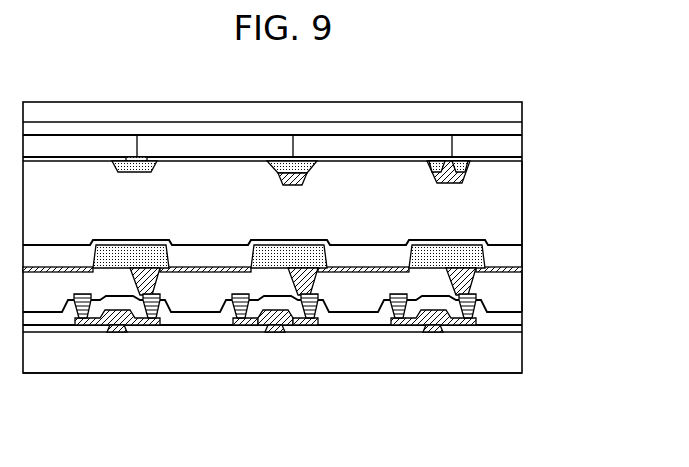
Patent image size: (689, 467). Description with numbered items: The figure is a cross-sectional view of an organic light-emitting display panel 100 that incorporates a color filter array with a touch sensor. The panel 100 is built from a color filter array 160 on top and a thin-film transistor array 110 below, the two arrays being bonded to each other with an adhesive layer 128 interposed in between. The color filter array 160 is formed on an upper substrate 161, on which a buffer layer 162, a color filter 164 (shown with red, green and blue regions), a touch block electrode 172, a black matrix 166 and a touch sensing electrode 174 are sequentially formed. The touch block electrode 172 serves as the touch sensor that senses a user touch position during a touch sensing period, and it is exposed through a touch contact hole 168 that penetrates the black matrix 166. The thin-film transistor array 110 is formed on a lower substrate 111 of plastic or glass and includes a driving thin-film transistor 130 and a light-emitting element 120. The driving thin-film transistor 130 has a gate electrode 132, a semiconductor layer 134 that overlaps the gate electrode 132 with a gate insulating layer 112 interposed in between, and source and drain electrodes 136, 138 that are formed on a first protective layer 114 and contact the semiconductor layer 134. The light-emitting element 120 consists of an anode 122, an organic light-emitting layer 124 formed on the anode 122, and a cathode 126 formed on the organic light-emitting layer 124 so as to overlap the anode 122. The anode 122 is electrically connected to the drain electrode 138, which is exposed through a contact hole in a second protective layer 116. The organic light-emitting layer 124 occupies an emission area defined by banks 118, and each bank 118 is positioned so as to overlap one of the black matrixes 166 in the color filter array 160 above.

The organic light-emitting display panel 100 is at (623, 123).
The thin-film transistor array 110 is at (324, 305).
The lower substrate 111 is at (302, 352).
The gate insulating layer 112 is at (510, 330).
The first protective layer 114 is at (512, 316).
The second protective layer 116 is at (510, 287).
The bank 118 is at (485, 258).
The light-emitting element 120 is at (272, 223).
The anode 122 is at (308, 203).
The organic light-emitting layer 124 is at (357, 262).
The cathode 126 is at (328, 243).
The adhesive layer 128 is at (512, 215).
The driving thin-film transistor 130 is at (283, 371).
The gate electrode 132 is at (269, 371).
The semiconductor layer 134 is at (296, 323).
The source electrode 136 is at (233, 323).
The drain electrode 138 is at (317, 323).
The color filter array 160 is at (323, 136).
The upper substrate 161 is at (514, 113).
The buffer layer 162 is at (516, 130).
The color filter 164 is at (512, 148).
The black matrix 166 is at (139, 174).
The touch contact hole 168 is at (452, 176).
The touch block electrode 172 is at (302, 170).
The touch sensing electrode 174 is at (277, 176).